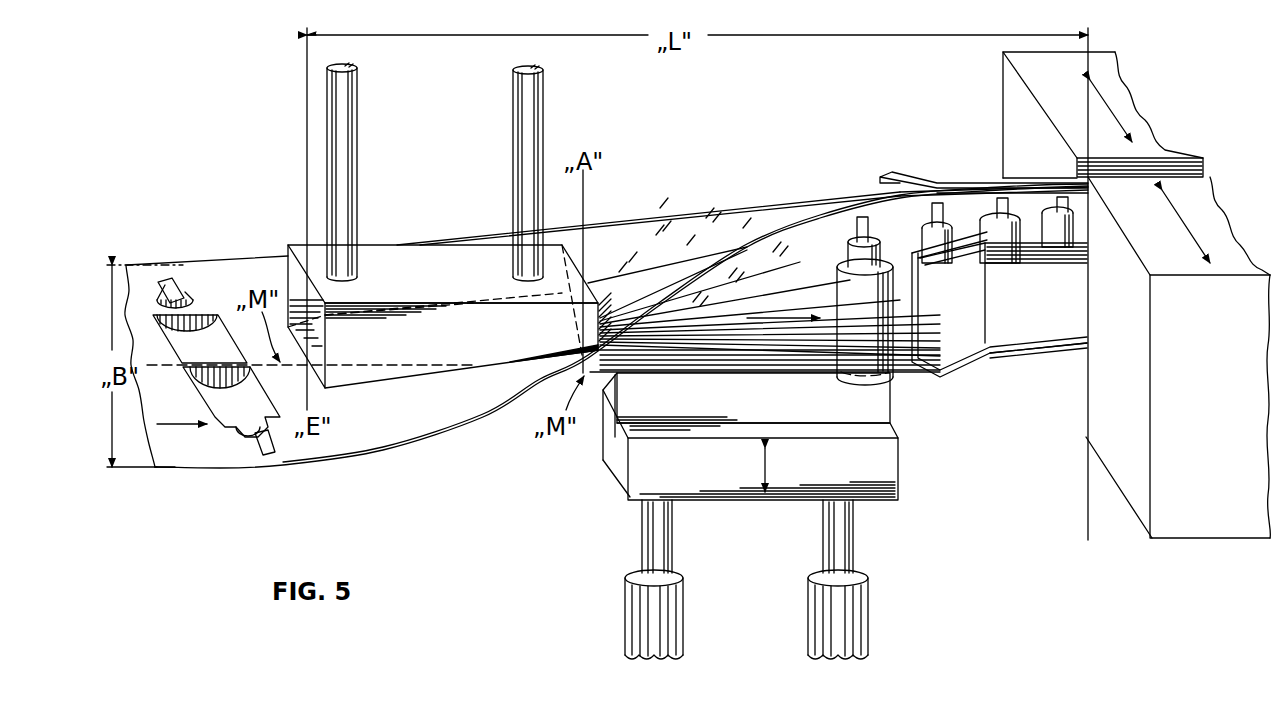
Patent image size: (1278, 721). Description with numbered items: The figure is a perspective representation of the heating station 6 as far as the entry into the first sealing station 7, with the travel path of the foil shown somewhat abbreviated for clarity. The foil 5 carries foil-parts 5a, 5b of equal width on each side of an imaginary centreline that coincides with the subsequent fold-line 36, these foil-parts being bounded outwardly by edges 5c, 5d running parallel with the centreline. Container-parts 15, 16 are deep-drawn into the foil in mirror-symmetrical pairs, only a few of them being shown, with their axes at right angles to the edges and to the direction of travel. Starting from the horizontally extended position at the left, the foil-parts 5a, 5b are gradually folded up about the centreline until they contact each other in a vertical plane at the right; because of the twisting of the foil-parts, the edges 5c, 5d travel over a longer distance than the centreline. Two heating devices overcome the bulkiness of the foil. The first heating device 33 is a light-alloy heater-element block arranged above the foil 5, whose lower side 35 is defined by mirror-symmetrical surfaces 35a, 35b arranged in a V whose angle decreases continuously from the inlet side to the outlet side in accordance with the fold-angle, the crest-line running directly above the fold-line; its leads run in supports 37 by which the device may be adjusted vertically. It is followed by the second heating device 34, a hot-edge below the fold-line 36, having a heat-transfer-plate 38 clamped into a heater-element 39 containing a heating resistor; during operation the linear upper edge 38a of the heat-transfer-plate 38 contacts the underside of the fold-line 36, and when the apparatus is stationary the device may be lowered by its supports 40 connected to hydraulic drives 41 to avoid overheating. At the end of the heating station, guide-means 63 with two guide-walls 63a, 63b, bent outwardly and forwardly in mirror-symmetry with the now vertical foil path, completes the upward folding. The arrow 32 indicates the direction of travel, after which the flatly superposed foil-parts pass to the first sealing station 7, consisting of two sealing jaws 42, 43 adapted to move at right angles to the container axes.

The foil 5 is at (157, 257).
The foil-part 5a is at (190, 458).
The foil-part 5b is at (210, 268).
The edge 5c is at (330, 469).
The edge 5d is at (663, 206).
The heating station 6 is at (508, 494).
The first sealing station 7 is at (1178, 551).
The container-part 15 is at (258, 413).
The container-part 16 is at (229, 358).
The feed direction 32 is at (170, 422).
The first heating device 33 is at (395, 242).
The second heating device 34 is at (779, 516).
The lower side 35 is at (437, 382).
The surface 35a is at (548, 357).
The surface 35b is at (482, 298).
The fold-line 36 is at (737, 322).
The supports 37 is at (348, 121).
The heat-transfer-plate 38 is at (878, 406).
The upper edge 38a is at (652, 379).
The heater-element 39 is at (890, 475).
The supports 40 is at (837, 542).
The hydraulic drives 41 is at (817, 598).
The sealing jaw 42 is at (1238, 533).
The sealing jaw 43 is at (1142, 108).
The guide-means 63 is at (968, 374).
The guide-wall 63a is at (1012, 329).
The guide-wall 63b is at (920, 177).